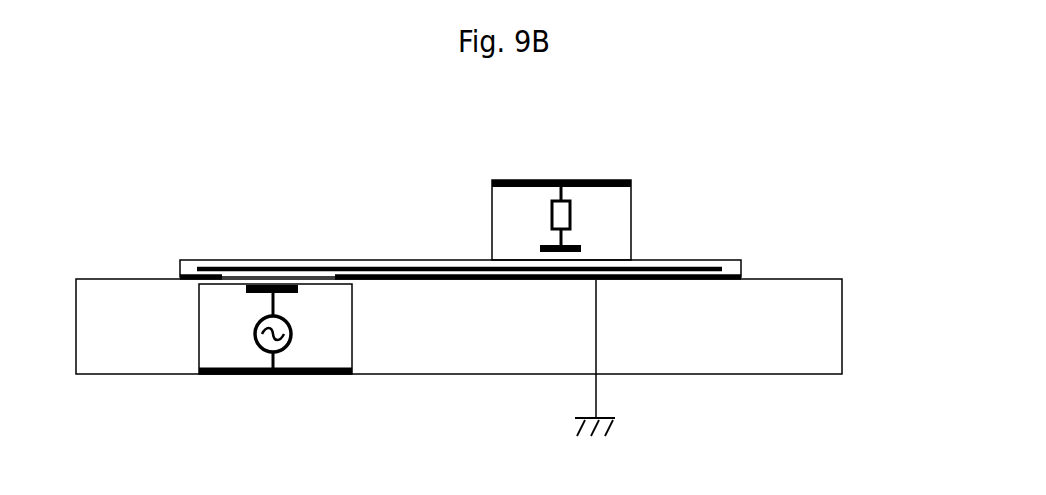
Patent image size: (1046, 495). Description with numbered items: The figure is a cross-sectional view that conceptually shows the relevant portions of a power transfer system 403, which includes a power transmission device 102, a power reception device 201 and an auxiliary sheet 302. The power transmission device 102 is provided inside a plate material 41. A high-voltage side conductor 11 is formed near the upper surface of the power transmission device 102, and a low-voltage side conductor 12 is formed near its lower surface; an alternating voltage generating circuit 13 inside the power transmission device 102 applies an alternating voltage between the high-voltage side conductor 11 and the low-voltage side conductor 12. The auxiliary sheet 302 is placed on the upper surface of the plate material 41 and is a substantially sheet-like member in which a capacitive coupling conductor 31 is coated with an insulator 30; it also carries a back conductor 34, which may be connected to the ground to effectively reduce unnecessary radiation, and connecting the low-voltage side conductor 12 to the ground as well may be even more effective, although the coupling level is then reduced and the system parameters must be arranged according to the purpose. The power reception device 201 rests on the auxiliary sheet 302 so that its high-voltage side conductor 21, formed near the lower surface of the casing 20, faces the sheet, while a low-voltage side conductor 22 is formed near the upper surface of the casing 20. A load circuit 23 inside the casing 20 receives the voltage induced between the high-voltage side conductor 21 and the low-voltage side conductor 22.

The power transfer system 403 is at (793, 120).
The plate material 41 is at (812, 288).
The insulator 30 is at (741, 262).
The capacitive coupling conductor 31 is at (371, 266).
The back conductor 34 is at (442, 283).
The auxiliary sheet 302 is at (699, 248).
The power transmission device 102 is at (189, 302).
The low-voltage side conductor 12 is at (297, 377).
The high-voltage side conductor 11 is at (256, 296).
The alternating voltage generating circuit 13 is at (291, 333).
The power reception device 201 is at (458, 194).
The casing 20 is at (632, 212).
The low-voltage side conductor 22 is at (535, 180).
The load circuit 23 is at (552, 216).
The high-voltage side conductor 21 is at (574, 243).